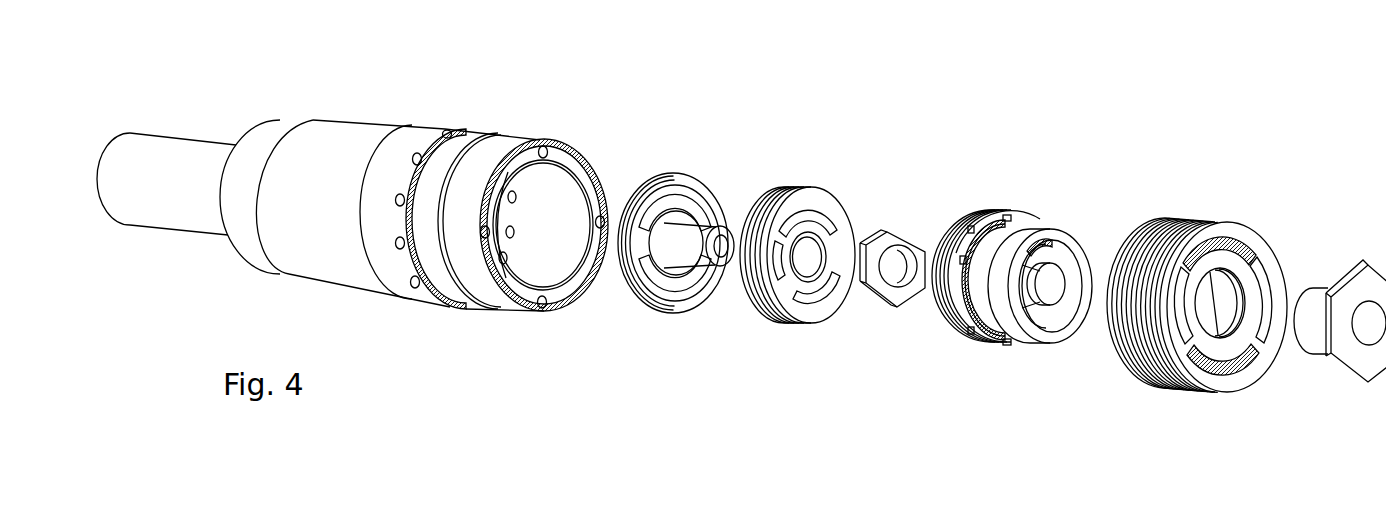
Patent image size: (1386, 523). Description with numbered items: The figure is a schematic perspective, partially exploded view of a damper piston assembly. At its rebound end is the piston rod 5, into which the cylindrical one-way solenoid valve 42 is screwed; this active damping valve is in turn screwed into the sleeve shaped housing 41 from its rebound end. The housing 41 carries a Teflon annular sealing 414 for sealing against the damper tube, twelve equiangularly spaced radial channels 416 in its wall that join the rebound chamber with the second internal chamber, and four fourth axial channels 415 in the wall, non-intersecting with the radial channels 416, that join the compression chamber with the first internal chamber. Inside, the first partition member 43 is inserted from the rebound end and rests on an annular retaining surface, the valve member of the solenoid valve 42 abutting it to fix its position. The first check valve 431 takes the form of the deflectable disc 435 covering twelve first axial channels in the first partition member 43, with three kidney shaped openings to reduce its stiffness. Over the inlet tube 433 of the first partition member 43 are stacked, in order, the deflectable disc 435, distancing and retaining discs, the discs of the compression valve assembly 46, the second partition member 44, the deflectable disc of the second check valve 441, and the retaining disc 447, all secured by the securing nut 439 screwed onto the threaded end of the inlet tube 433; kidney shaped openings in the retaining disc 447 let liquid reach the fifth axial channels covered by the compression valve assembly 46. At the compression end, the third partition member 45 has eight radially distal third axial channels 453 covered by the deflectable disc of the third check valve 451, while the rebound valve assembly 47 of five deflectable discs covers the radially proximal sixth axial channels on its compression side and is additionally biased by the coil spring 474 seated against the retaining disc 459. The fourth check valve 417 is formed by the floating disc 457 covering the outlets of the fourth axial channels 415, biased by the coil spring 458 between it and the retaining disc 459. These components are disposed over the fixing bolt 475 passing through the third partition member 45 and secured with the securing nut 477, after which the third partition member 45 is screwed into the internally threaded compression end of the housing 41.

The piston rod 5 is at (170, 157).
The one-way solenoid valve 42 is at (253, 155).
The housing 41 is at (337, 145).
The radial channels 416 is at (402, 238).
The Teflon annular sealing 414 is at (447, 158).
The fourth axial channels 415 is at (605, 226).
The first check valve 431 is at (679, 252).
The first partition member 43 is at (633, 190).
The deflectable disc 435 is at (663, 192).
The inlet tube 433 is at (708, 216).
The second partition member 44 is at (792, 252).
The compression valve assembly 46 is at (730, 411).
The second check valve 441 is at (811, 252).
The retaining disc 447 is at (825, 204).
The securing nut 439 is at (897, 230).
The third check valve 451 is at (978, 252).
The third partition member 45 is at (945, 228).
The third axial channels 453 is at (962, 228).
The rebound valve assembly 47 is at (1042, 252).
The coil spring 474 is at (1027, 228).
The fixing bolt 475 is at (1052, 286).
The fourth check valve 417 is at (1197, 252).
The floating disc 457 is at (1136, 230).
The coil spring 458 is at (1171, 216).
The retaining disc 459 is at (1231, 226).
The securing nut 477 is at (1350, 297).